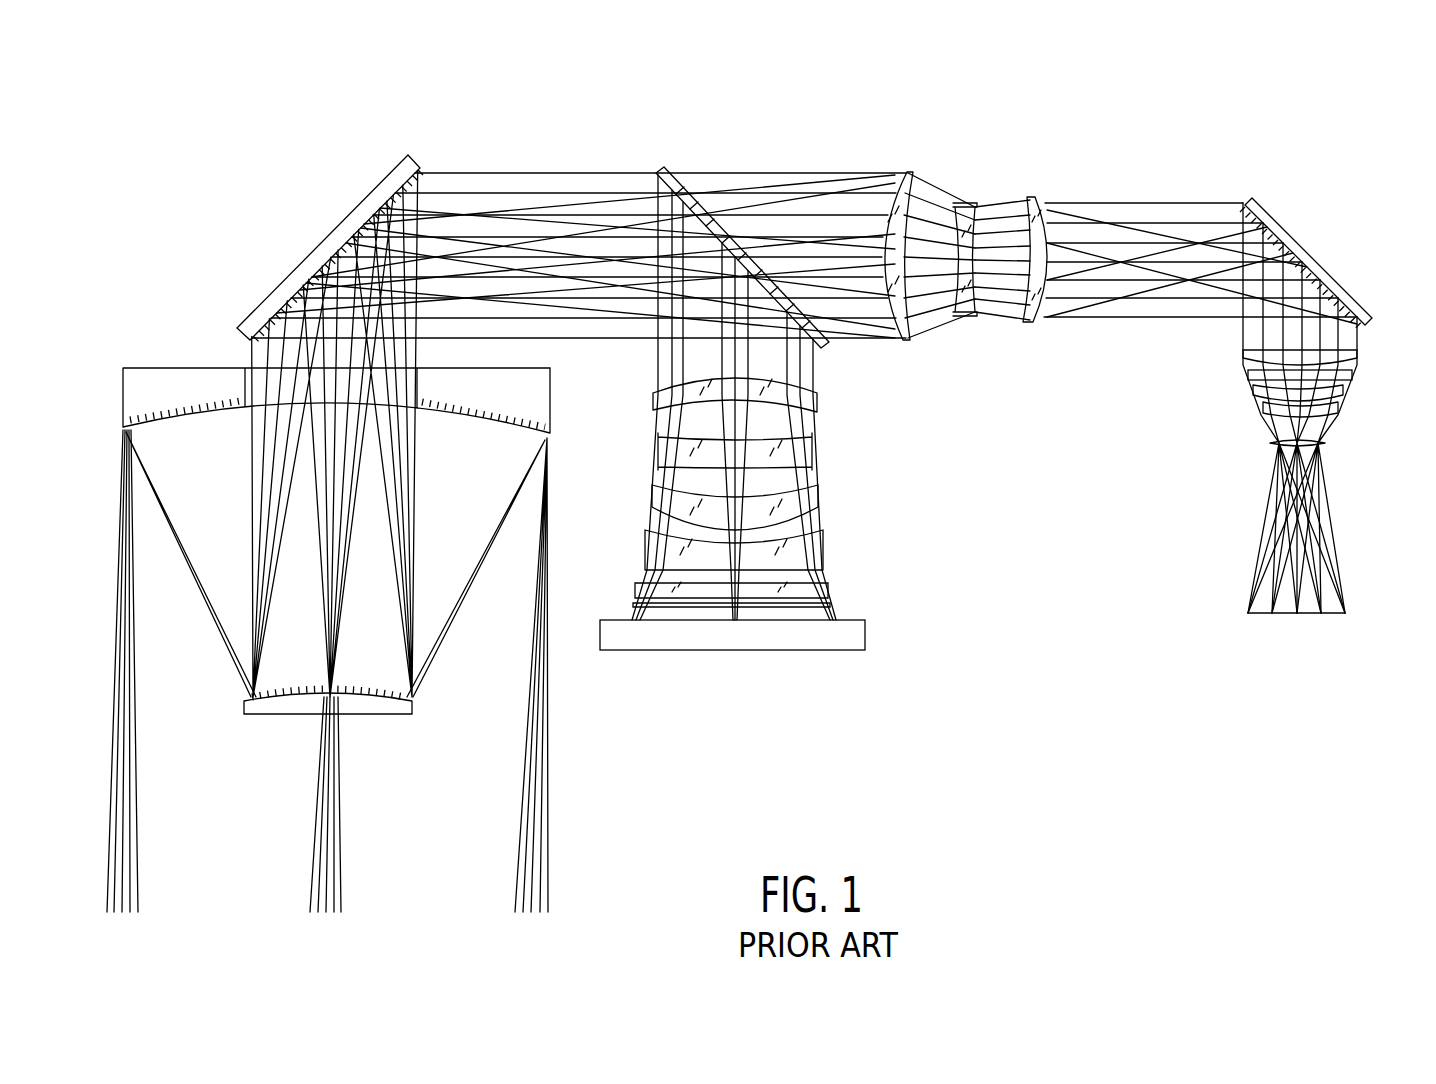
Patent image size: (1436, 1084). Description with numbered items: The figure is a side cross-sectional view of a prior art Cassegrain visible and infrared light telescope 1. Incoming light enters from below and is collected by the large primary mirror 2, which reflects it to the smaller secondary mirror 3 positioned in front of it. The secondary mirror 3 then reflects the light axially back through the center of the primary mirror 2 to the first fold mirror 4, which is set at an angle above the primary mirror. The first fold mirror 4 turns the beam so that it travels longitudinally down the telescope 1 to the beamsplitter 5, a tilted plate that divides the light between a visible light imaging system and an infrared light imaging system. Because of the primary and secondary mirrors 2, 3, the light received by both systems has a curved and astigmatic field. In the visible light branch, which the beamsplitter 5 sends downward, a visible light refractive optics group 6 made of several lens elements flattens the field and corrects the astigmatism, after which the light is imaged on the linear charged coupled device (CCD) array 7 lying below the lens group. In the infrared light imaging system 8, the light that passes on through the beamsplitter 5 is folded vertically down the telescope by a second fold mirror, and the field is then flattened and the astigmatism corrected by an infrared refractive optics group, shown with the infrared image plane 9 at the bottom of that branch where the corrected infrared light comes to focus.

The Cassegrain visible and infrared light telescope 1 is at (262, 123).
The primary mirror 2 is at (185, 368).
The secondary mirror 3 is at (285, 716).
The first fold mirror 4 is at (418, 162).
The beamsplitter 5 is at (672, 170).
The visible light refractive optics group 6 is at (838, 393).
The linear charged coupled device (CCD) array 7 is at (867, 633).
The infrared light imaging system 8 is at (1340, 244).
The imaging lens group 9 is at (1348, 613).